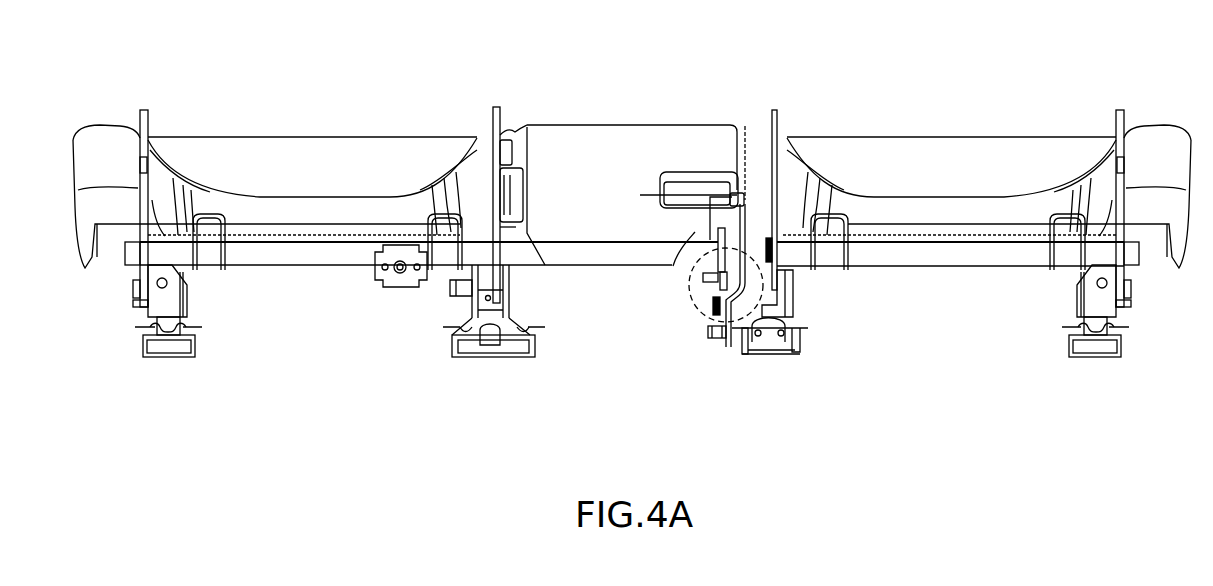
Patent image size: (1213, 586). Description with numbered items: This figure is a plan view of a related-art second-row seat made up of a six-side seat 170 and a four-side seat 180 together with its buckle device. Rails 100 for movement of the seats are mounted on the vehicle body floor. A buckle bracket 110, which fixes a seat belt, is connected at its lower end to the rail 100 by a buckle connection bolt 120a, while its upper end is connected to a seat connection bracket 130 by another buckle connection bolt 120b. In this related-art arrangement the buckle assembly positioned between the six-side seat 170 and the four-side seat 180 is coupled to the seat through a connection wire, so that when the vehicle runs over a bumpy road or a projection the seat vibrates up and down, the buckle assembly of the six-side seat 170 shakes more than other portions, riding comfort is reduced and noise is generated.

The rail 100 is at (768, 352).
The buckle bracket 110 is at (712, 312).
The buckle connection bolt 120a is at (712, 338).
The buckle connection bolt 120b is at (703, 278).
The seat connection bracket 130 is at (712, 252).
The 6-side seat 170 is at (318, 160).
The 4-side seat 180 is at (945, 162).